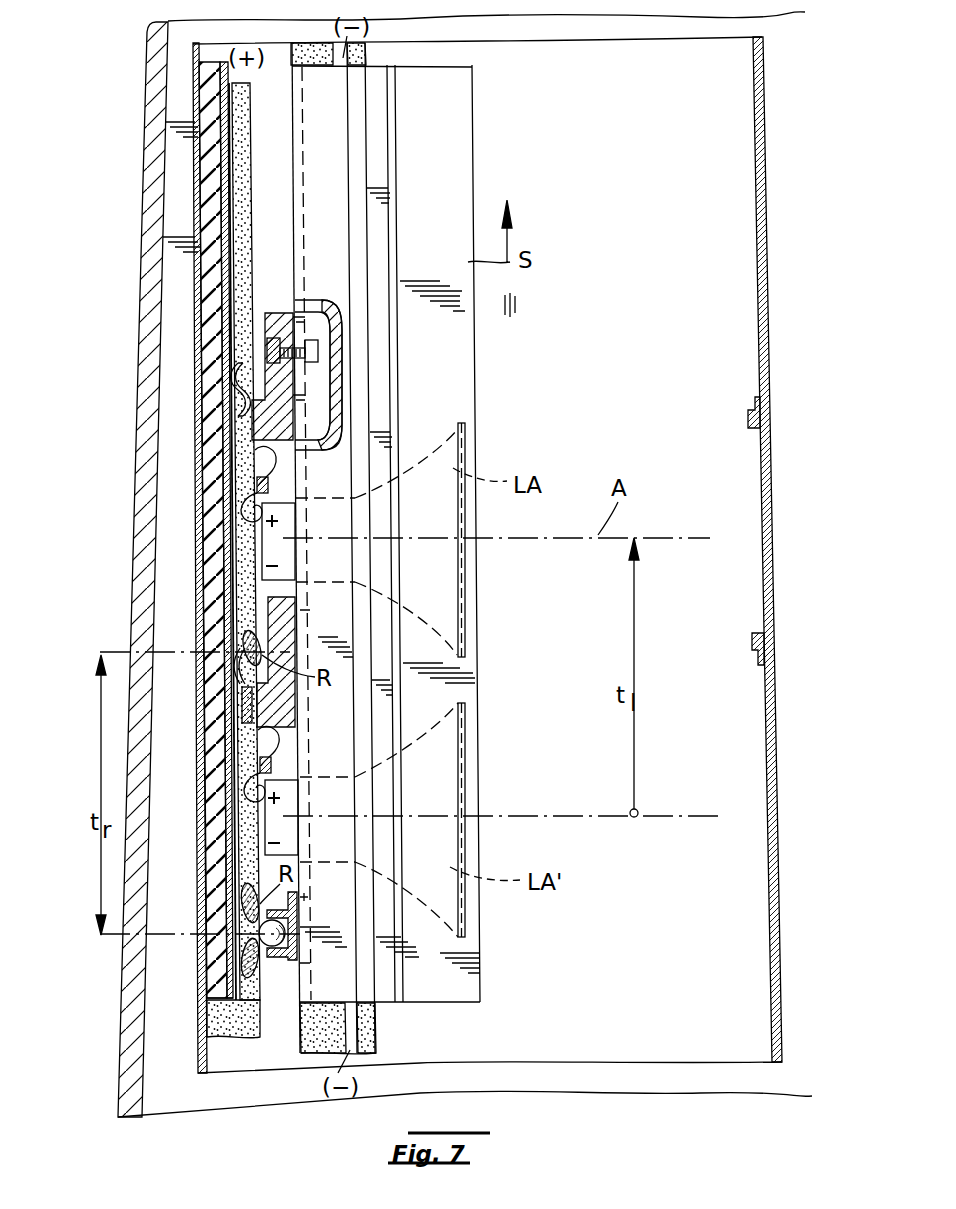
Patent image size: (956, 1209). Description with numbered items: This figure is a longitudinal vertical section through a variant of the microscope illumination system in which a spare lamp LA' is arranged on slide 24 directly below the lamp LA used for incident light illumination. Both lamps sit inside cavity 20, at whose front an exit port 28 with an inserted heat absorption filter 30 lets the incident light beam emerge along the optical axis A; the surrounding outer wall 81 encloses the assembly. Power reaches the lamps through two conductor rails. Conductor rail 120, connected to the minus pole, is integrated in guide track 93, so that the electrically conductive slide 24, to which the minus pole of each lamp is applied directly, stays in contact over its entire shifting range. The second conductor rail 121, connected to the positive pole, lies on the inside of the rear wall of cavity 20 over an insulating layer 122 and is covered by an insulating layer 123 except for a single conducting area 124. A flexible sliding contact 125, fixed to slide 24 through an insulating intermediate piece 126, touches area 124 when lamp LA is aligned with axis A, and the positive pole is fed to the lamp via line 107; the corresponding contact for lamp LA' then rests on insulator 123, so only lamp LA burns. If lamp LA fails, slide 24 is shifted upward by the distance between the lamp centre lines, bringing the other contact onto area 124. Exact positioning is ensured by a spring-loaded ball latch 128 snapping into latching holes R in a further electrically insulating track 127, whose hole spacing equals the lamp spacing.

The cavity 20 is at (763, 305).
The slide 24 is at (480, 146).
The exit port 28 is at (770, 631).
The heat absorption filter 30 is at (757, 560).
The outer wall 81 is at (146, 592).
The guide track 93 is at (317, 44).
The line 107 is at (255, 495).
The conductor rail 120 is at (341, 62).
The second conductor rail 121 is at (223, 78).
The insulating layer 122 is at (210, 107).
The insulating layer 123 is at (235, 252).
The conducting area 124 is at (248, 398).
The flexible sliding contact 125 is at (255, 458).
The insulating intermediate piece 126 is at (280, 444).
The electrically insulating track 127 is at (248, 1020).
The spring-loaded ball latch 128 is at (268, 958).